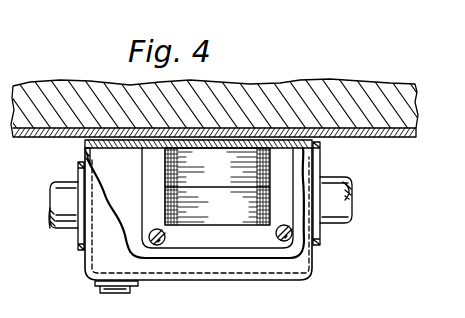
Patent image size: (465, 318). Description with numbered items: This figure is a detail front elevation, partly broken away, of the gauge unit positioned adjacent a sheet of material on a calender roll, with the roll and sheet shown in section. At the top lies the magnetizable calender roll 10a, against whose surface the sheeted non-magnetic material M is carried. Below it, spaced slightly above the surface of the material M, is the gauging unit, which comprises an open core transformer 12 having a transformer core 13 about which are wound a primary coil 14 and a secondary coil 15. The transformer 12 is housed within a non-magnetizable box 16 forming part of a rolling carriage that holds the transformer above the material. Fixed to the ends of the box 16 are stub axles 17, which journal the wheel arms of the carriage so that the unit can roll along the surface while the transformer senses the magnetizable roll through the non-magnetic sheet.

The magnetizable calender roll 10a is at (369, 92).
The non-magnetic material M is at (399, 131).
The open core transformer 12 is at (282, 140).
The transformer core 13 is at (287, 171).
The primary coil 14 is at (272, 162).
The secondary coil 15 is at (276, 211).
The non-magnetizable box 16 is at (317, 263).
The stub axles 17 is at (346, 224).